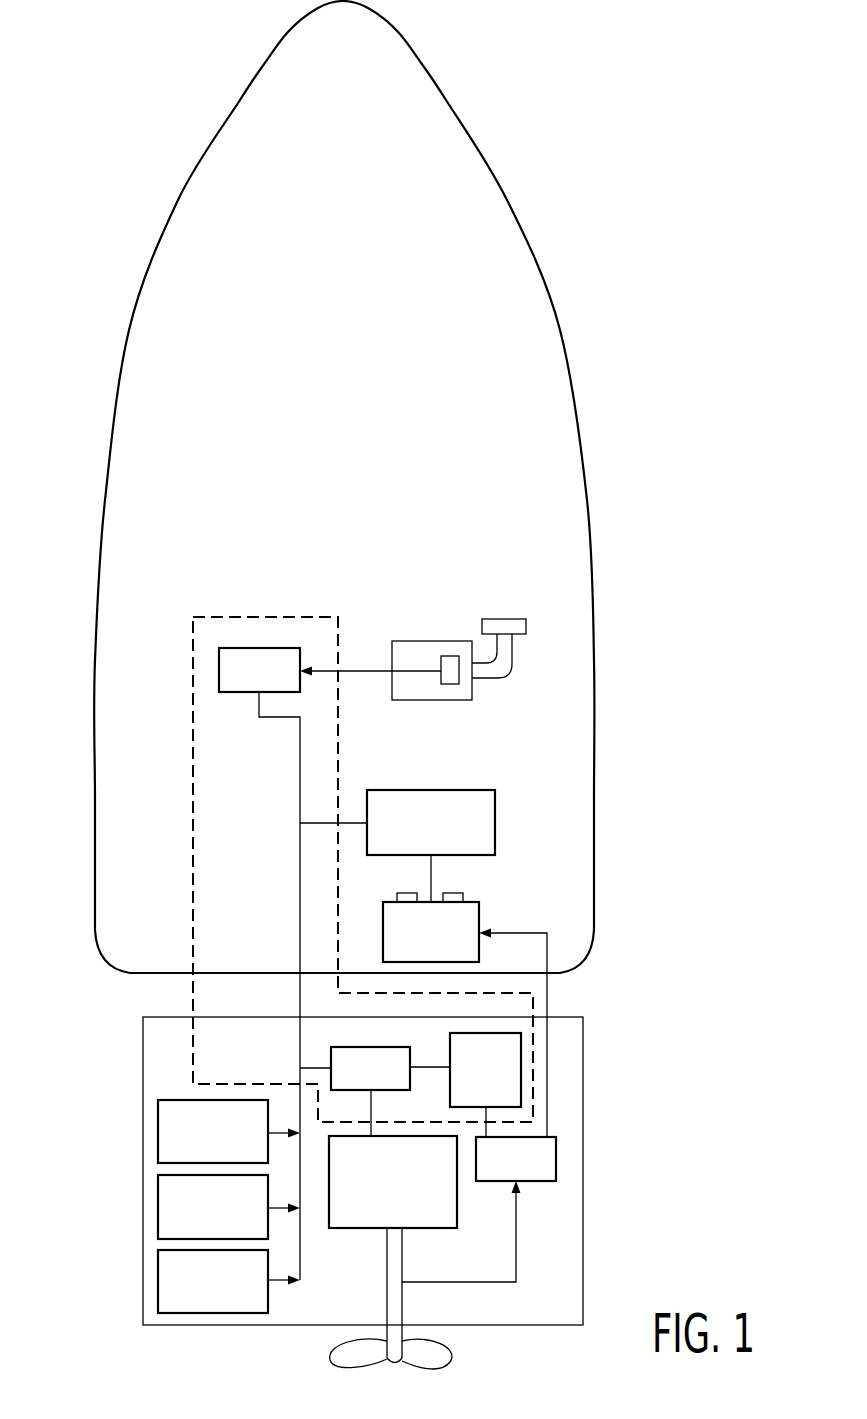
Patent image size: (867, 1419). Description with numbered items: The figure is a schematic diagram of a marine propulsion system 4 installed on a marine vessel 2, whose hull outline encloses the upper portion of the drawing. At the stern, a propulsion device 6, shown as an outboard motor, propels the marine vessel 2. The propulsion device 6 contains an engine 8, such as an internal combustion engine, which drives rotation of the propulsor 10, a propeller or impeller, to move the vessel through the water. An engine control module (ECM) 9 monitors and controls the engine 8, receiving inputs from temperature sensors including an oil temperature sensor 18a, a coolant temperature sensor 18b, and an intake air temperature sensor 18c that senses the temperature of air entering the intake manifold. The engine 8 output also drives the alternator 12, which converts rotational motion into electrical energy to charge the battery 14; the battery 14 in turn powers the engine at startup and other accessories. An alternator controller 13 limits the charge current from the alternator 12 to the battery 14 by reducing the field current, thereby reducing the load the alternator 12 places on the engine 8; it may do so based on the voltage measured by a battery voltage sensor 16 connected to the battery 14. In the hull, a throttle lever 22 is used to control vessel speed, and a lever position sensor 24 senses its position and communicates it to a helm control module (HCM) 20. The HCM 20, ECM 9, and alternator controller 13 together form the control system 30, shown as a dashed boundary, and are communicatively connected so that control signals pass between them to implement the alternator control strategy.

The marine vessel 2 is at (460, 92).
The marine propulsion system 4 is at (334, 453).
The propulsion device 6 is at (517, 1325).
The engine 8 is at (420, 1228).
The engine control module (ECM) 9 is at (358, 1047).
The propulsor 10 is at (345, 1348).
The alternator 12 is at (533, 1181).
The alternator controller 13 is at (450, 1050).
The battery 14 is at (383, 932).
The battery voltage sensor 16 is at (431, 790).
The oil temperature sensor 18a is at (158, 1133).
The coolant temperature sensor 18b is at (158, 1208).
The intake air temperature sensor 18c is at (158, 1280).
The helm control module (HCM) 20 is at (237, 692).
The throttle lever 22 is at (505, 619).
The lever position sensor 24 is at (450, 684).
The control system 30 is at (235, 617).